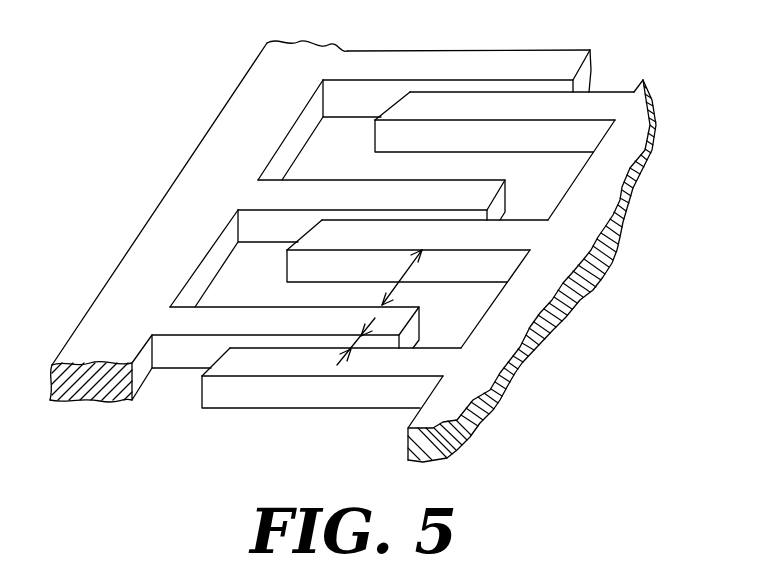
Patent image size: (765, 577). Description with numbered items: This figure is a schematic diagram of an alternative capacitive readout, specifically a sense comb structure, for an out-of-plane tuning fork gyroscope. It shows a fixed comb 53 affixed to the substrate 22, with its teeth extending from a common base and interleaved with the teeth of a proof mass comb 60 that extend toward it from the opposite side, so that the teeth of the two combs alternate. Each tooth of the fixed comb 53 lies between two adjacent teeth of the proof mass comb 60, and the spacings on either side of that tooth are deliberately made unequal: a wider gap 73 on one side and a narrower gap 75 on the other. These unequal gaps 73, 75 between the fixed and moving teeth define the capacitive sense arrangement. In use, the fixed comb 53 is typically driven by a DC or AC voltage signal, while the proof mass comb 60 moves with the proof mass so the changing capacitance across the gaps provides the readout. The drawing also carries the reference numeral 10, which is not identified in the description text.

The substrate / anchored comb base 10 is at (588, 223).
The substrate 22 is at (54, 243).
The fixed comb 53 is at (213, 140).
The proof mass comb 60 is at (583, 107).
The gap 73 is at (404, 268).
The gap 75 is at (355, 350).